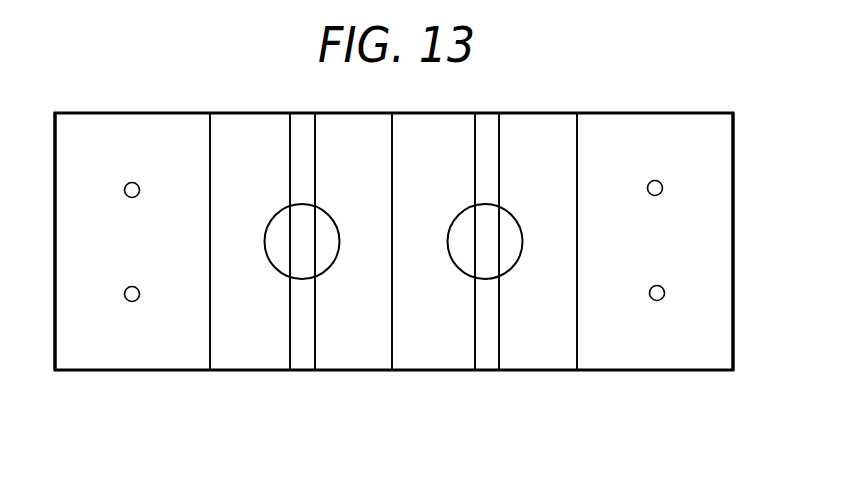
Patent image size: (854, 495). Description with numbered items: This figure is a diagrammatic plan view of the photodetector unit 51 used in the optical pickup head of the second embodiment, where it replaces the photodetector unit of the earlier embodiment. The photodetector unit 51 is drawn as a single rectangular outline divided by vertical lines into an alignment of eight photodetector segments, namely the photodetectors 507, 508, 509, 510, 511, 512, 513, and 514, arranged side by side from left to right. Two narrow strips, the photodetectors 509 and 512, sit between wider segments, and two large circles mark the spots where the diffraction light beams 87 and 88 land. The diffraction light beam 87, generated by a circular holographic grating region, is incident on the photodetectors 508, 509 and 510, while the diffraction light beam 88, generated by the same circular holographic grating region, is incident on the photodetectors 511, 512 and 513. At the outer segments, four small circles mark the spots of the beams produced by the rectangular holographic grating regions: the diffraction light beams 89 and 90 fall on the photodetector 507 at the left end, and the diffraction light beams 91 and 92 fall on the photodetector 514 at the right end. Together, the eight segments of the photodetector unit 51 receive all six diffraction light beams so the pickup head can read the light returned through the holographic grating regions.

The photodetector unit 51 is at (733, 163).
The diffraction light beam 87 is at (302, 204).
The diffraction light beam 88 is at (487, 204).
The diffraction light beam 89 is at (125, 184).
The diffraction light beam 90 is at (126, 301).
The diffraction light beam 91 is at (650, 182).
The diffraction light beam 92 is at (663, 299).
The photodetector 507 is at (152, 363).
The photodetector 508 is at (267, 367).
The photodetector 509 is at (306, 365).
The photodetector 510 is at (377, 368).
The photodetector 511 is at (449, 367).
The photodetector 512 is at (495, 368).
The photodetector 513 is at (559, 367).
The photodetector 514 is at (654, 368).